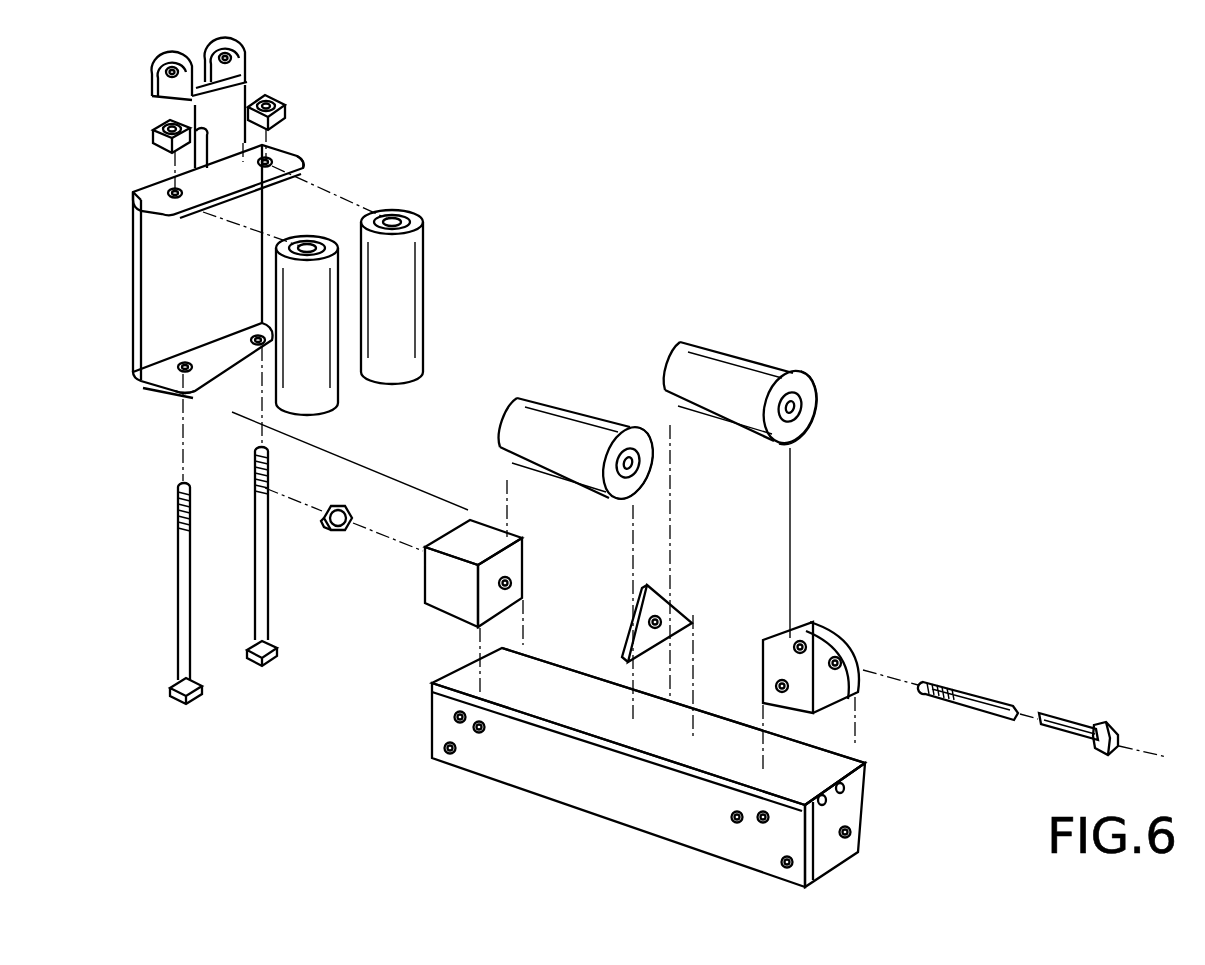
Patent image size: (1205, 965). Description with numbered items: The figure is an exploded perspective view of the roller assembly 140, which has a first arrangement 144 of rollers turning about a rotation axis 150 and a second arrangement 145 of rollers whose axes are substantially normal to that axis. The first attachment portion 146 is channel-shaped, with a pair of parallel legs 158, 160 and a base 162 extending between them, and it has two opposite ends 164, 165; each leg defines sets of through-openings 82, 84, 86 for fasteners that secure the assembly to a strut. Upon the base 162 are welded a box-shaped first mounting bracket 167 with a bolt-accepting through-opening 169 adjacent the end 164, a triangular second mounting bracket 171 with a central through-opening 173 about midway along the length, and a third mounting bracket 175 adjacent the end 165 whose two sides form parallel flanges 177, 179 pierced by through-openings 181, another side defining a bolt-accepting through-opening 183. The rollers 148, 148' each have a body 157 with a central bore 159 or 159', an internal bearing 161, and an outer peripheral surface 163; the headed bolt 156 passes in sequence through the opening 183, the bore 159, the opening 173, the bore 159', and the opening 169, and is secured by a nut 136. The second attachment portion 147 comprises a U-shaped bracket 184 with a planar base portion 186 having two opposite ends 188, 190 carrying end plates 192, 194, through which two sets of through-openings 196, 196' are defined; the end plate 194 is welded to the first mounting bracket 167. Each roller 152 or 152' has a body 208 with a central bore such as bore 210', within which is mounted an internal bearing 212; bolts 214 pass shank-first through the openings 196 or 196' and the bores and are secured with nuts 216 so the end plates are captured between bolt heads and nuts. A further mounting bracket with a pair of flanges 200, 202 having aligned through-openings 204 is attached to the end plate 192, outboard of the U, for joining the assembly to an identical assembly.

The flange 200 is at (160, 58).
The flange 202 is at (240, 44).
The through-openings 204 is at (163, 95).
The nut 216 is at (285, 103).
The second attachment portion 147 is at (133, 248).
The U-shaped bracket 184 is at (133, 292).
The planar base portion 186 is at (133, 202).
The end 188 is at (133, 192).
The end plate 192 is at (305, 163).
The end 190 is at (133, 327).
The end plate 194 is at (228, 390).
The through-openings 196 is at (123, 252).
The through-openings 196' is at (214, 242).
The second arrangement of rollers 145 is at (460, 281).
The internal bearing 212 is at (293, 283).
The body 208 is at (425, 312).
The roller 152 is at (366, 346).
The roller 152' is at (448, 264).
The central bore 210' is at (448, 264).
The bolt 214 is at (178, 648).
The nut 136 is at (338, 532).
The first mounting bracket 167 is at (442, 582).
The bolt-accepting through-opening 169 is at (511, 584).
The roller assembly 140 is at (738, 292).
The first arrangement of rollers 144 is at (835, 412).
The roller 148 is at (774, 390).
The roller 148' is at (623, 405).
The body 157 is at (792, 372).
The peripheral surface 163 is at (616, 428).
The central bore 159 is at (834, 444).
The central bore 159' is at (684, 495).
The internal bearing 161 is at (787, 398).
The second mounting bracket 171 is at (632, 618).
The bolt-accepting through-opening 173 is at (662, 622).
The third mounting bracket 175 is at (790, 637).
The flange 177 is at (817, 710).
The flange 179 is at (858, 665).
The through-openings 181 is at (838, 657).
The bolt-accepting through-opening 183 is at (806, 642).
The first attachment portion 146 is at (637, 827).
The end 164 is at (462, 663).
The base 162 is at (743, 736).
The leg 158 is at (750, 870).
The leg 160 is at (868, 808).
The end 165 is at (866, 765).
The through-opening 82 is at (444, 748).
The through-opening 84 is at (479, 733).
The through-opening 86 is at (455, 714).
The headed bolt 156 is at (990, 697).
The rotation axis 150 is at (1157, 753).